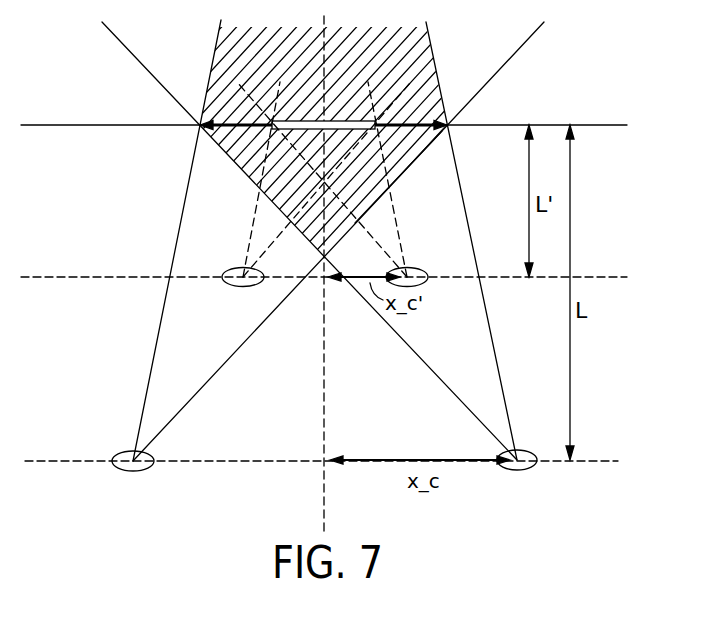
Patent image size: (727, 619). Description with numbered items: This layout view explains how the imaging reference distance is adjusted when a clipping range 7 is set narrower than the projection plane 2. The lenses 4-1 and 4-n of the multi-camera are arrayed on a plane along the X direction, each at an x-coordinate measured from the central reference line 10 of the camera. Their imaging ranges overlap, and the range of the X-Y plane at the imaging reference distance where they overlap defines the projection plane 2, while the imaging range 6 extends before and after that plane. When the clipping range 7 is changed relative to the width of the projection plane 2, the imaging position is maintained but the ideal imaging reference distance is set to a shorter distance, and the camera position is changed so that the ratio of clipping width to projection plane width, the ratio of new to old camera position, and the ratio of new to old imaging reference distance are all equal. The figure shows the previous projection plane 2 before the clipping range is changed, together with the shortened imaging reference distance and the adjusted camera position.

The projection plane 2 is at (430, 112).
The imaging range 6 is at (428, 47).
The clipping range 7 is at (277, 128).
The central reference line 10 is at (328, 378).
The lens 4-1 is at (118, 452).
The lens 4-n is at (517, 470).